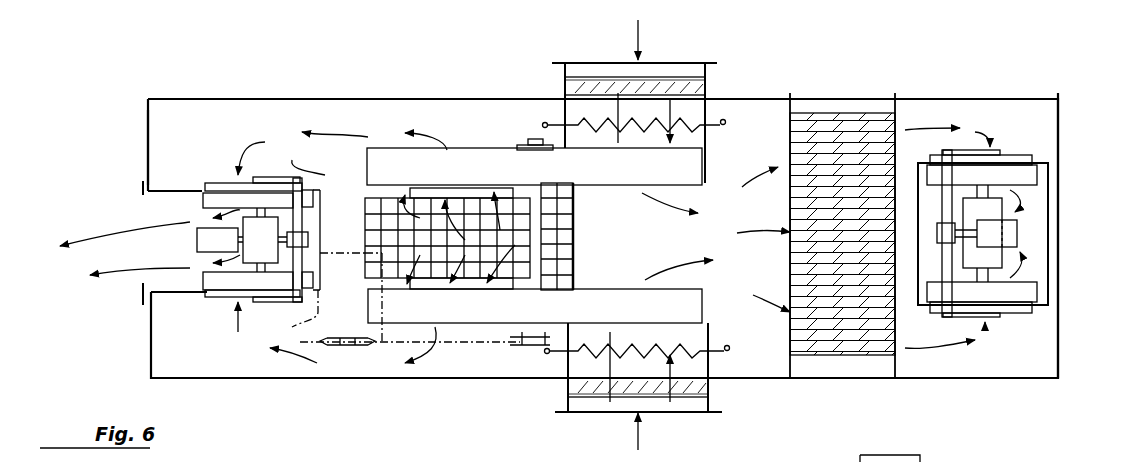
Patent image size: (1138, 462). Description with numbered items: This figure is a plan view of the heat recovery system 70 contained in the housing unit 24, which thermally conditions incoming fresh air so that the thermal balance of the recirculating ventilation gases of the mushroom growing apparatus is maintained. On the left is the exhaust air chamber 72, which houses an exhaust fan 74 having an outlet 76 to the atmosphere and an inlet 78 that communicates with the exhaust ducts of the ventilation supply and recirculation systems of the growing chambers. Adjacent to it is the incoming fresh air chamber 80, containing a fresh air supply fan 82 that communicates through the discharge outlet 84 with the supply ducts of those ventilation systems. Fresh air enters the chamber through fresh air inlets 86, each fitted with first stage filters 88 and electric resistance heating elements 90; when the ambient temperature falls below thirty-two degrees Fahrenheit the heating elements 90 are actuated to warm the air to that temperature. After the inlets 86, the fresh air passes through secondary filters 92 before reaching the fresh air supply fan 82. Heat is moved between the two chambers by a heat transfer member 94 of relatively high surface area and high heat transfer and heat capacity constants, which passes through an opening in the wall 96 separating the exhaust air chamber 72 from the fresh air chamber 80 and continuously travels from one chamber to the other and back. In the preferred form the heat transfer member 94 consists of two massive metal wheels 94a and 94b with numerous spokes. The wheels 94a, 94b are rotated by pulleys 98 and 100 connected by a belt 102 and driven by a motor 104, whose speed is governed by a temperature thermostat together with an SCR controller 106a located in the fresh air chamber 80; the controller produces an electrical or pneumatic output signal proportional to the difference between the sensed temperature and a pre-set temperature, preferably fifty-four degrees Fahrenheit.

The housing unit 24 is at (336, 98).
The heat recovery system 70 is at (500, 93).
The exhaust air chamber 72 is at (188, 131).
The exhaust fan 74 is at (215, 297).
The outlet 76 is at (140, 284).
The inlet 78 is at (475, 210).
The incoming fresh air chamber 80 is at (782, 130).
The fresh air supply fan 82 is at (1025, 292).
The discharge outlet 84 is at (1040, 250).
The fresh air inlets 86 is at (705, 55).
The first stage filters 88 is at (705, 90).
The electric resistance heating elements 90 is at (708, 122).
The secondary filters 92 is at (847, 342).
The heat transfer member 94 is at (607, 220).
The metal wheel 94a is at (667, 180).
The metal wheel 94b is at (610, 298).
The wall 96 is at (573, 250).
The pulley 98 is at (522, 342).
The pulley 100 is at (345, 348).
The belt 102 is at (485, 342).
The motor 104 is at (340, 251).
The SCR controller 106a is at (920, 456).